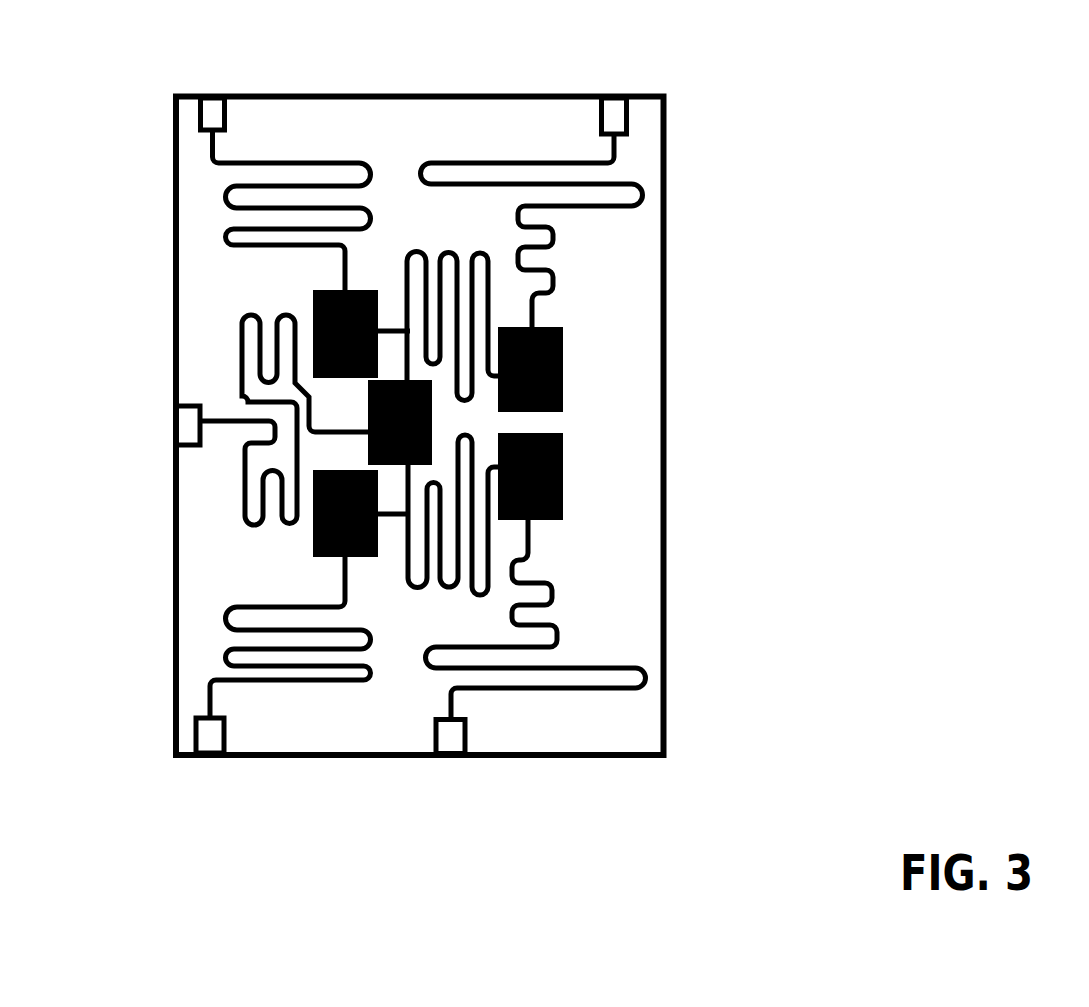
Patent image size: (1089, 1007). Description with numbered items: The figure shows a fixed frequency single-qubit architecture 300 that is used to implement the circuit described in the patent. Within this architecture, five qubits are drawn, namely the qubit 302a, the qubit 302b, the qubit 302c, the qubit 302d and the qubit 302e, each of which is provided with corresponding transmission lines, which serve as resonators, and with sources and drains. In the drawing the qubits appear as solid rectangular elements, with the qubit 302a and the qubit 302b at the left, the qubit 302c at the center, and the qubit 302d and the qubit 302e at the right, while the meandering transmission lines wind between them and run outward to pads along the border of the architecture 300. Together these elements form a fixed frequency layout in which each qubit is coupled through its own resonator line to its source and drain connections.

The fixed frequency single-qubit architecture 300 is at (698, 36).
The qubit 302a is at (293, 298).
The qubit 302b is at (313, 580).
The qubit 302c is at (363, 408).
The qubit 302d is at (632, 372).
The qubit 302e is at (632, 486).